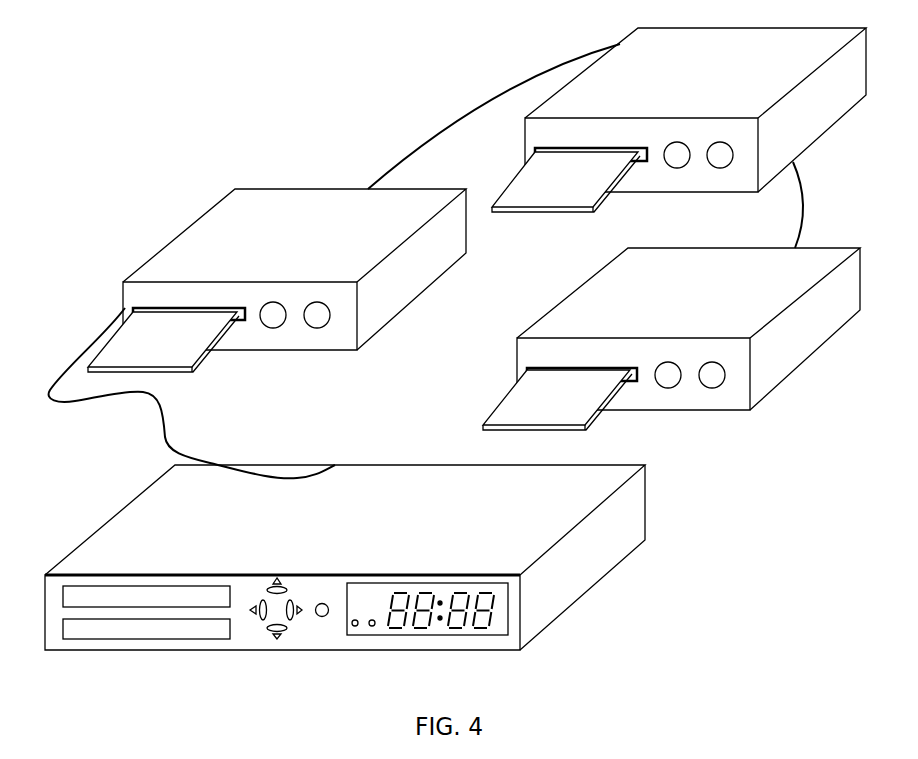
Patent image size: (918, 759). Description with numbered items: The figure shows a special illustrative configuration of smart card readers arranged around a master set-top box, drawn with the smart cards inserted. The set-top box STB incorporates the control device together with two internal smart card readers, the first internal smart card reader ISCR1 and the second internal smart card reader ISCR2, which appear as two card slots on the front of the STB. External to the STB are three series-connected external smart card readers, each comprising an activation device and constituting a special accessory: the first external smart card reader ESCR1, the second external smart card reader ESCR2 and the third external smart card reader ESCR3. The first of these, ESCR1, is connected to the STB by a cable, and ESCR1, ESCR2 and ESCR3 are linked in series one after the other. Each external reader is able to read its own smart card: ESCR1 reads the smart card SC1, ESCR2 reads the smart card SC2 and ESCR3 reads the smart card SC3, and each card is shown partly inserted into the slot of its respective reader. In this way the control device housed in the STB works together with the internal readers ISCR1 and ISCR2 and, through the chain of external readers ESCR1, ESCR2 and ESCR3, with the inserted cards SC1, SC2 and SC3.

The first external smart card reader ESCR1 is at (323, 248).
The second external smart card reader ESCR2 is at (728, 82).
The third external smart card reader ESCR3 is at (730, 303).
The smart card SC1 is at (193, 350).
The smart card SC2 is at (585, 194).
The smart card SC3 is at (578, 413).
The set-top box STB is at (317, 531).
The first internal smart card reader ISCR1 is at (200, 547).
The second internal smart card reader ISCR2 is at (205, 698).